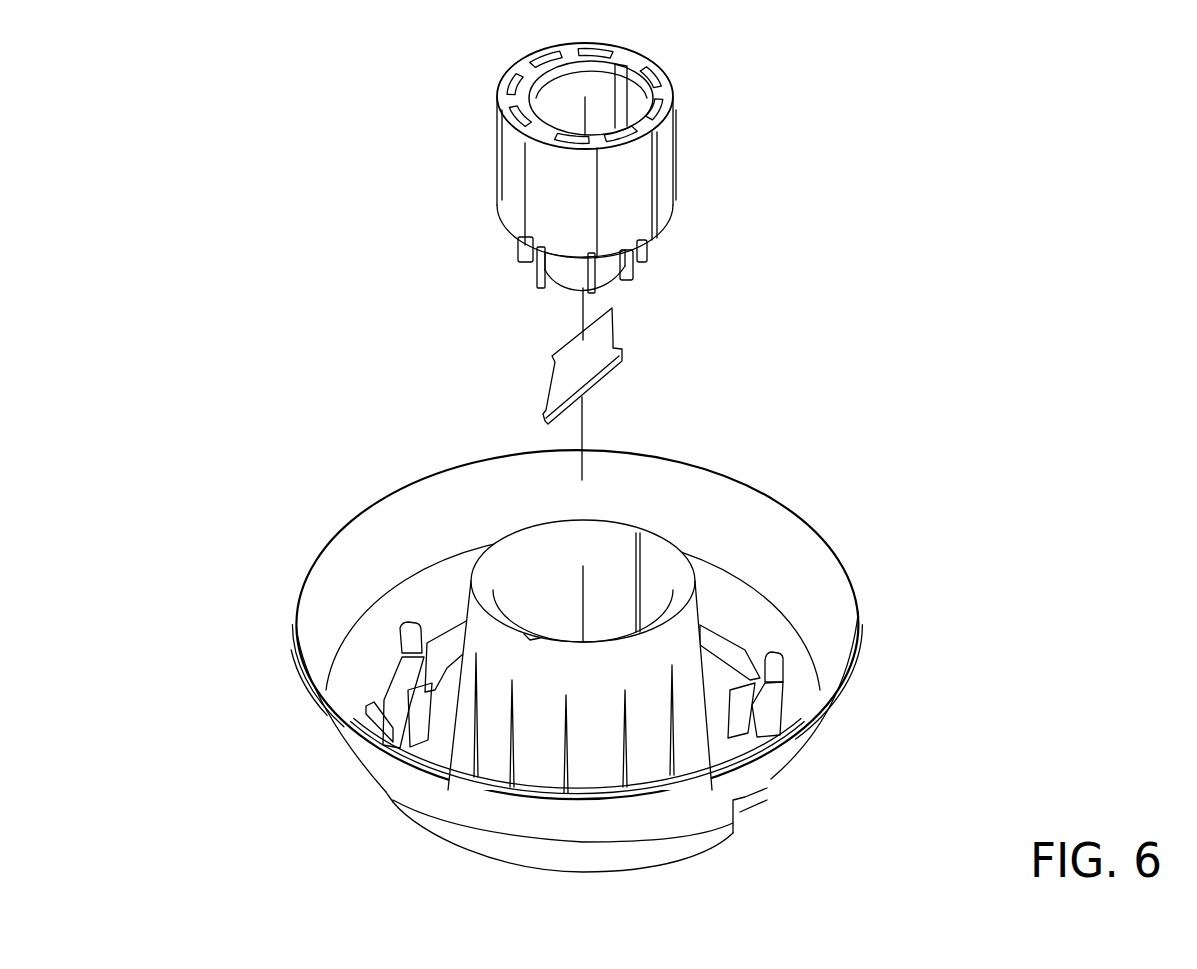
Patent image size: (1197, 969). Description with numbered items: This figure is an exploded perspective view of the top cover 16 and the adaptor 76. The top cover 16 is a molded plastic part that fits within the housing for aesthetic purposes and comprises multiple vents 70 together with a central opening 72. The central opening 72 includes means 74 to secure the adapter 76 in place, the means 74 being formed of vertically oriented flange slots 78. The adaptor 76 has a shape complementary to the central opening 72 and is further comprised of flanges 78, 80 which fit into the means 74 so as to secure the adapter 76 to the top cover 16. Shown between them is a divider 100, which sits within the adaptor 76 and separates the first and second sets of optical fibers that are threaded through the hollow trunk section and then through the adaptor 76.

The base housing / bowl 16 is at (823, 569).
The spring clips 70 is at (390, 693).
The central bore of hub 72 is at (547, 578).
The central hub 74 is at (653, 558).
The cylindrical insert 76 is at (663, 172).
The slot in hub 78 is at (638, 535).
The locking tabs 80 is at (535, 285).
The key plate 100 is at (597, 367).